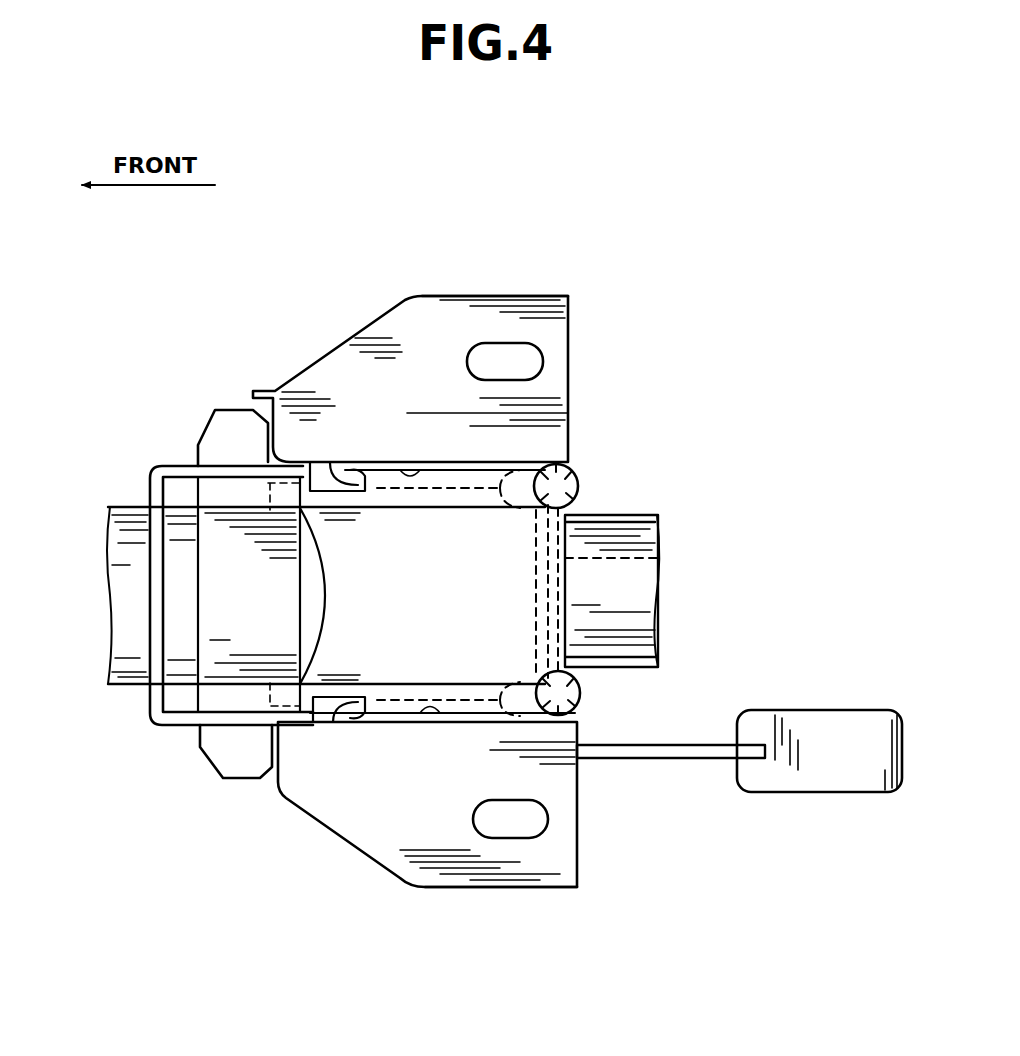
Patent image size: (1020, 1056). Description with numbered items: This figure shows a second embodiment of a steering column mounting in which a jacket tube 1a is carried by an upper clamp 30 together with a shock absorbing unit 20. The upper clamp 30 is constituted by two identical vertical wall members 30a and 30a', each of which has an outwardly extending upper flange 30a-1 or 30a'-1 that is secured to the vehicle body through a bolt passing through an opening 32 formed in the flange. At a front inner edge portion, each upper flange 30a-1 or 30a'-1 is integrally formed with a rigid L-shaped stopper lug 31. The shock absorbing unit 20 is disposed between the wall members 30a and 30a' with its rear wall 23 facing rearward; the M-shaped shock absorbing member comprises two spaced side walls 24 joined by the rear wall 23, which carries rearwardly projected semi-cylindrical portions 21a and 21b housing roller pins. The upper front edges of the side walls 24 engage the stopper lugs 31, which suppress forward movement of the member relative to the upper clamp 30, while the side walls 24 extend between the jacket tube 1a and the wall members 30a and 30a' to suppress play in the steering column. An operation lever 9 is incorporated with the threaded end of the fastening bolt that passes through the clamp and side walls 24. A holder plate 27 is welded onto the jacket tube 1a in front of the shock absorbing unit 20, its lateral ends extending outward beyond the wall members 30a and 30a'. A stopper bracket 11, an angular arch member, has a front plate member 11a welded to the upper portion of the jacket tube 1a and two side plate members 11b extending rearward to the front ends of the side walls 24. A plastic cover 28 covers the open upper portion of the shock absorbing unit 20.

The jacket tube 1a is at (621, 537).
The operation lever 9 is at (713, 762).
The stopper bracket 11 is at (147, 635).
The front plate member 11a is at (152, 670).
The side plate member 11b is at (233, 468).
The shock absorbing unit 20 is at (573, 632).
The semi-cylindrical portion 21a is at (586, 461).
The semi-cylindrical portion 21b is at (586, 698).
The rear wall 23 is at (565, 558).
The side wall 24 is at (370, 466).
The holder plate 27 is at (202, 428).
The plastic cover 28 is at (345, 618).
The upper clamp 30 is at (383, 868).
The vertical wall member 30a is at (410, 362).
The upper flange 30a-1 is at (447, 295).
The vertical wall member 30a' is at (442, 844).
The upper flange 30a'-1 is at (501, 951).
The L-shaped stopper lug 31 is at (345, 497).
The opening 32 is at (505, 352).